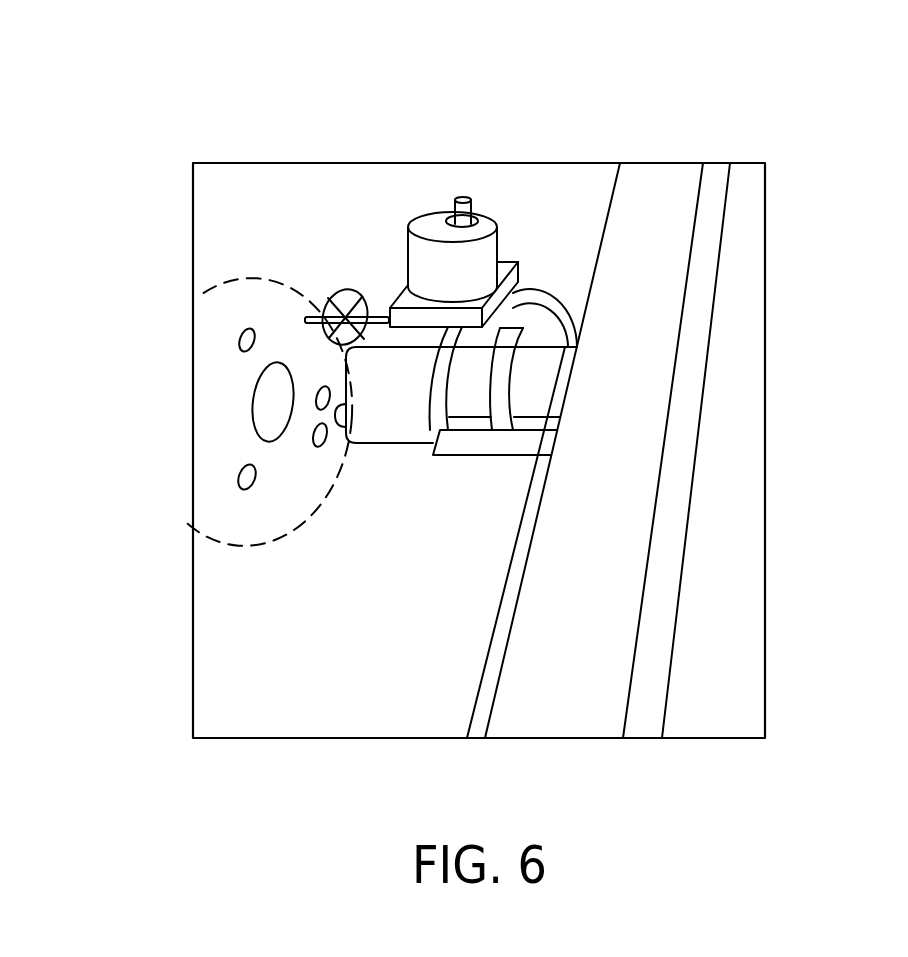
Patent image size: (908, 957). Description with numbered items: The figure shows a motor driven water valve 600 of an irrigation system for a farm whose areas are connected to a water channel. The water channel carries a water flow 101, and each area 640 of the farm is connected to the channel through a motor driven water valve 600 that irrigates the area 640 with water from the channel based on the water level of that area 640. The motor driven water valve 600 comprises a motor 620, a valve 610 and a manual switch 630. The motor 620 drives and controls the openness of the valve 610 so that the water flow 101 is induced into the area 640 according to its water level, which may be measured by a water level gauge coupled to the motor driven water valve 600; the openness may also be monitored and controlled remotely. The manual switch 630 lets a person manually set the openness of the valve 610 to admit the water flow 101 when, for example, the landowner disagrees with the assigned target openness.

The motor driven water valve 600 is at (150, 70).
The water flow 101 is at (733, 387).
The valve 610 is at (387, 420).
The motor 620 is at (498, 242).
The manual switch 630 is at (348, 289).
The area 640 is at (260, 298).